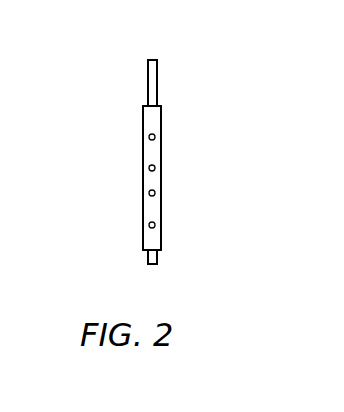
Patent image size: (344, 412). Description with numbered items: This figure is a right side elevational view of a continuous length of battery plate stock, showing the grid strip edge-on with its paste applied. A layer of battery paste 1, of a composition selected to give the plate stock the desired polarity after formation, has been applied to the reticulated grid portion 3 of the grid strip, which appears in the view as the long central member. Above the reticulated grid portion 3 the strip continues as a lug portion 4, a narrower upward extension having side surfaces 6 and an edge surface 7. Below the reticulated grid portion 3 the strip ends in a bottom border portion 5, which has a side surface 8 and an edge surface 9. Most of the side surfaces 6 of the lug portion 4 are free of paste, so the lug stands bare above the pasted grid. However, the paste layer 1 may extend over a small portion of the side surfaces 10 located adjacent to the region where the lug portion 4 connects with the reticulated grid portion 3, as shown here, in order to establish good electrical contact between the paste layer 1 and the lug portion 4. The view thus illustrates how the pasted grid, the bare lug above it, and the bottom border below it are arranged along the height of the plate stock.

The battery paste layer 1 is at (158, 153).
The reticulated grid portion 3 is at (158, 134).
The lug portion 4 is at (160, 72).
The bottom border portion 5 is at (157, 257).
The side surfaces 6 is at (148, 82).
The edge surface 7 is at (150, 60).
The side surface 8 is at (148, 257).
The edge surface 9 is at (153, 265).
The side surfaces adjacent the lug connection region 10 is at (157, 91).